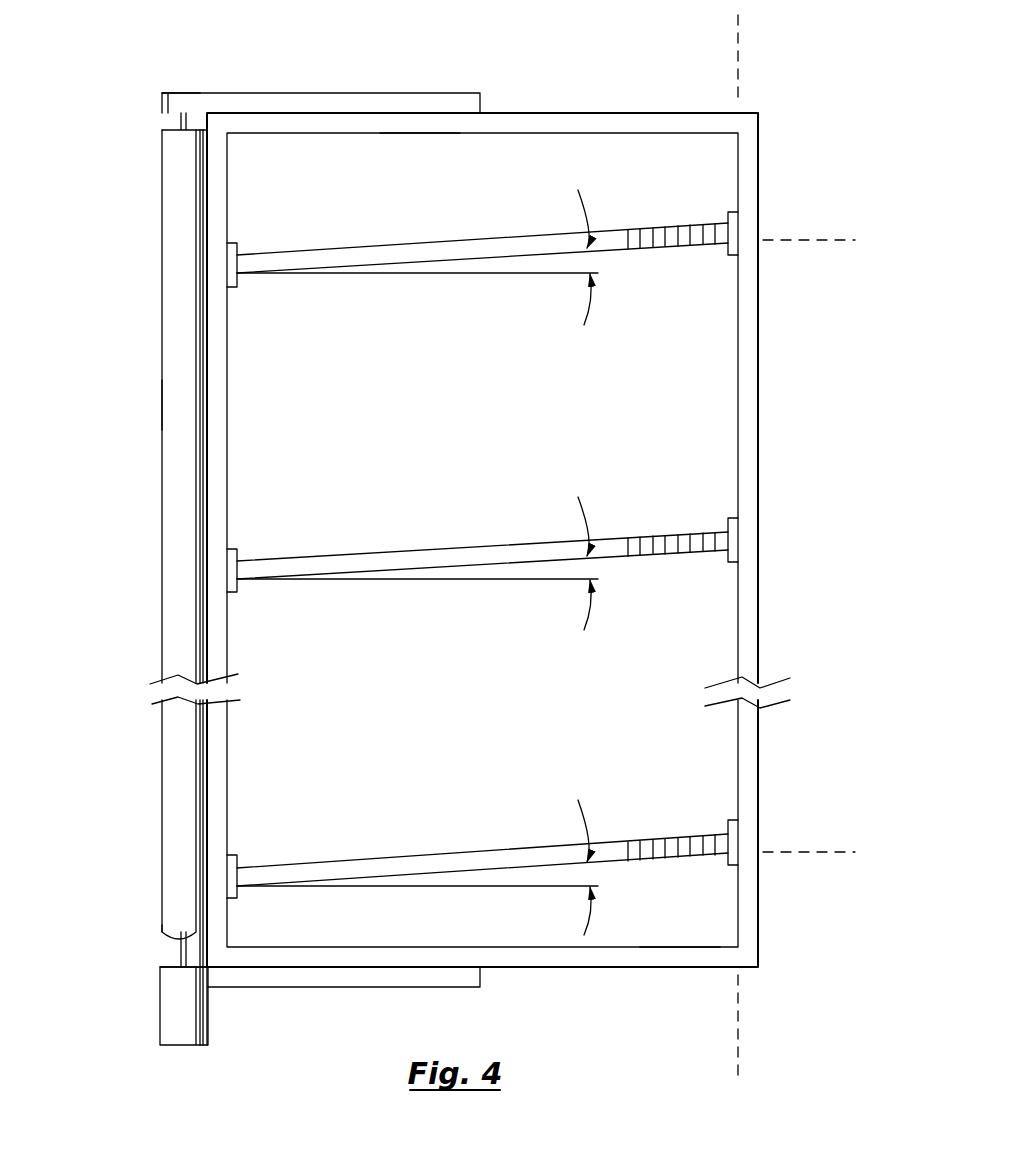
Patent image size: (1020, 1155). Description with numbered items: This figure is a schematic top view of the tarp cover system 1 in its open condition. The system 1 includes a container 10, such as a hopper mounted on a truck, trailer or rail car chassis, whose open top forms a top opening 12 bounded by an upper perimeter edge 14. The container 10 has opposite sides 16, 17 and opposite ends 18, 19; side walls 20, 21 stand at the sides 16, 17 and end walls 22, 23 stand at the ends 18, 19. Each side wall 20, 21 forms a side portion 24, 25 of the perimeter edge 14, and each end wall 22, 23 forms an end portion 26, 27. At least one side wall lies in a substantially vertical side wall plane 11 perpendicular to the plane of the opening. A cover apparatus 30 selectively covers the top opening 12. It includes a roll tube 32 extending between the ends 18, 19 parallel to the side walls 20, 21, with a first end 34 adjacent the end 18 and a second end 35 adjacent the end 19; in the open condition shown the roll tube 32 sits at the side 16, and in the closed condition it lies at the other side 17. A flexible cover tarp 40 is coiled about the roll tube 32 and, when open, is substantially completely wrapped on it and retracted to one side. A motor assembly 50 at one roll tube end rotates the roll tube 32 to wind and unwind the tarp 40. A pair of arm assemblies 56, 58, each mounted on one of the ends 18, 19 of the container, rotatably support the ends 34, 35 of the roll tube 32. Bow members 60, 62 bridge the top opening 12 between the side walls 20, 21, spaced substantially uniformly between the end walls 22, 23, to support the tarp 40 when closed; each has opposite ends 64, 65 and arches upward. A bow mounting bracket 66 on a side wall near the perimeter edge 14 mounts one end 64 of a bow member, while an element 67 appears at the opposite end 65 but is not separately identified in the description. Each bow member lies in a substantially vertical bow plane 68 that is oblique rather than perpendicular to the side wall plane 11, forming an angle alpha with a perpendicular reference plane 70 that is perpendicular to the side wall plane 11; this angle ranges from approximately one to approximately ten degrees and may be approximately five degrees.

The system 1 is at (766, 96).
The container 10 is at (164, 66).
The side wall plane 11 is at (740, 56).
The top opening 12 is at (770, 624).
The upper perimeter edge 14 is at (757, 769).
The side 16 is at (148, 403).
The side 17 is at (772, 343).
The end 18 is at (708, 978).
The end 19 is at (536, 94).
The side wall 20 is at (205, 350).
The side wall 21 is at (759, 480).
The end wall 22 is at (580, 974).
The end wall 23 is at (565, 112).
The side portion 24 is at (215, 458).
The side portion 25 is at (755, 665).
The end portion 26 is at (676, 953).
The end portion 27 is at (420, 125).
The cover apparatus 30 is at (160, 960).
The roll tube 32 is at (172, 936).
The first end 34 is at (197, 955).
The second end 35 is at (185, 125).
The cover tarp 40 is at (178, 245).
The motor assembly 50 is at (177, 1027).
The arm assembly 56 is at (320, 970).
The arm assembly 58 is at (348, 108).
The bow member 60 is at (488, 545).
The bow member 62 is at (482, 243).
The end 64 is at (240, 556).
The end 65 is at (726, 535).
The bow mounting bracket 66 is at (233, 248).
The upper rod fastener 67 is at (728, 222).
The bow plane 68 is at (808, 236).
The perpendicular reference plane 70 is at (500, 276).